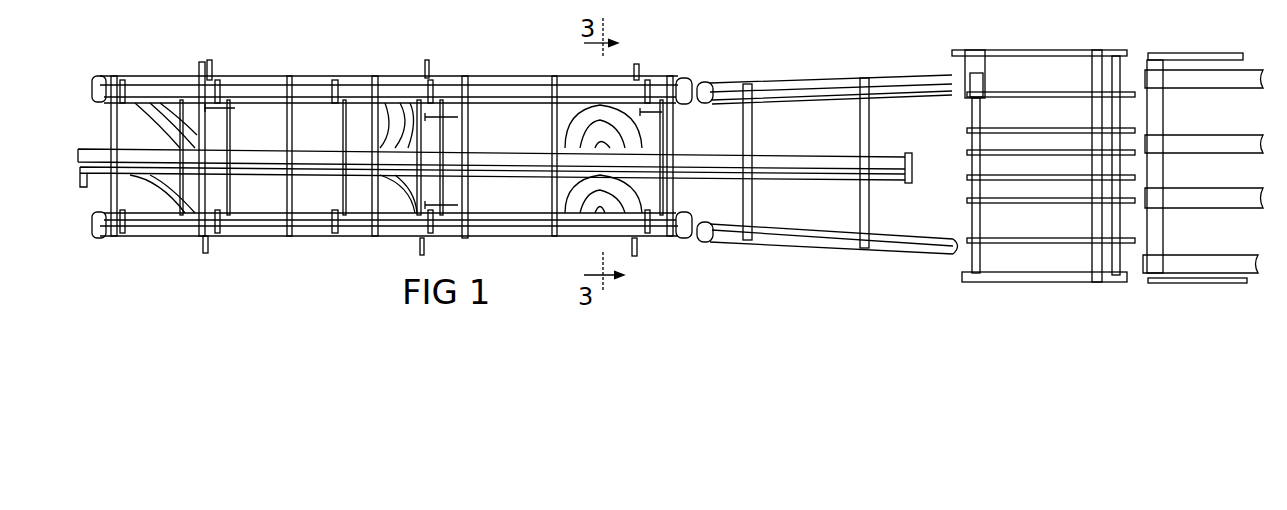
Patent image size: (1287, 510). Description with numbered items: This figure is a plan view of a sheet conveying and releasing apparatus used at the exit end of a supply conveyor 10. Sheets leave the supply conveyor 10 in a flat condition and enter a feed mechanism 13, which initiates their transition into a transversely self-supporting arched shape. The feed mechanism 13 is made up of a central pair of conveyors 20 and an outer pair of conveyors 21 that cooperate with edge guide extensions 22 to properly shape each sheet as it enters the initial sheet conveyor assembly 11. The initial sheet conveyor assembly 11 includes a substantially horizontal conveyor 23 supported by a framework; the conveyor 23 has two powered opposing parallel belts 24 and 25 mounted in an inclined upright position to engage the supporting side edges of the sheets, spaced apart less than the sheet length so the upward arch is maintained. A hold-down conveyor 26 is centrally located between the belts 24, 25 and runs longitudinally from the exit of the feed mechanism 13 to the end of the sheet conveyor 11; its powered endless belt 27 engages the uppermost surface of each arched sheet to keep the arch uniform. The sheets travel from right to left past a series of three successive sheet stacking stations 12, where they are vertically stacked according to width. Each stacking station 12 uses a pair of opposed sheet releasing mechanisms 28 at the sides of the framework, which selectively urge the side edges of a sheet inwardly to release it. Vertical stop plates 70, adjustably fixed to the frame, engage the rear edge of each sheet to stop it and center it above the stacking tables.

The supply conveyor 10 is at (1190, 272).
The initial sheet conveyor assembly 11 is at (487, 78).
The sheet stacking stations 12 is at (185, 68).
The feed mechanism 13 is at (1008, 290).
The central pair of conveyors 20 is at (972, 175).
The outer pair of conveyors 21 is at (1030, 130).
The edge guide extensions 22 is at (1042, 92).
The horizontal conveyor 23 is at (467, 244).
The powered belt 24 is at (306, 86).
The powered belt 25 is at (255, 234).
The hold-down conveyor 26 is at (772, 146).
The powered endless belt 27 is at (490, 158).
The sheet releasing mechanisms 28 is at (341, 110).
The vertical stop plates 70 is at (208, 108).